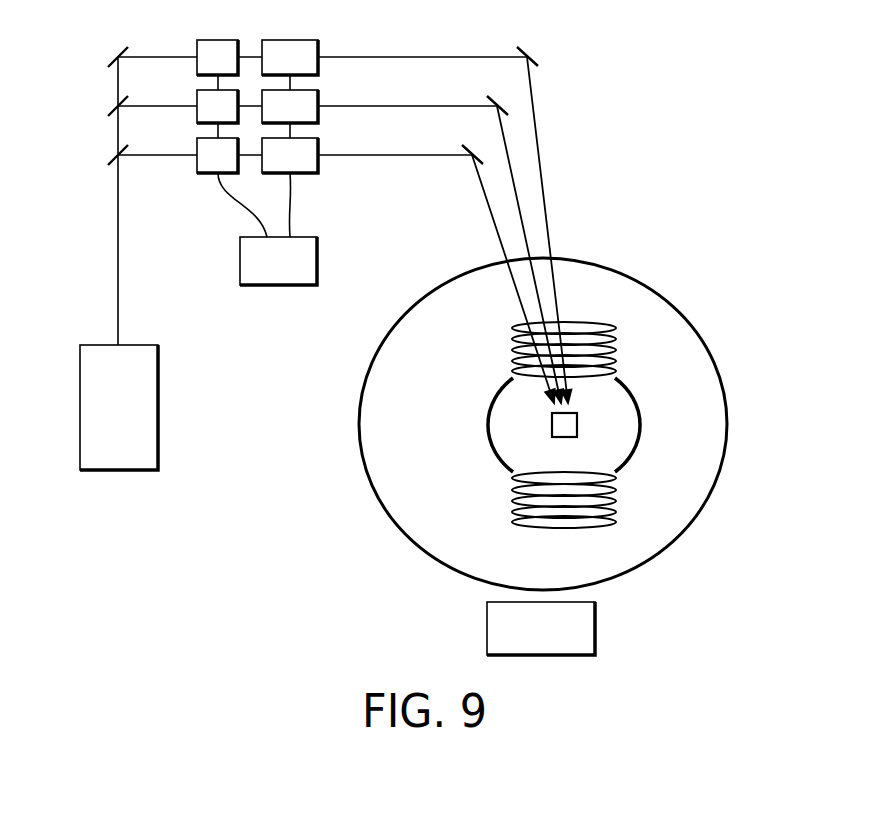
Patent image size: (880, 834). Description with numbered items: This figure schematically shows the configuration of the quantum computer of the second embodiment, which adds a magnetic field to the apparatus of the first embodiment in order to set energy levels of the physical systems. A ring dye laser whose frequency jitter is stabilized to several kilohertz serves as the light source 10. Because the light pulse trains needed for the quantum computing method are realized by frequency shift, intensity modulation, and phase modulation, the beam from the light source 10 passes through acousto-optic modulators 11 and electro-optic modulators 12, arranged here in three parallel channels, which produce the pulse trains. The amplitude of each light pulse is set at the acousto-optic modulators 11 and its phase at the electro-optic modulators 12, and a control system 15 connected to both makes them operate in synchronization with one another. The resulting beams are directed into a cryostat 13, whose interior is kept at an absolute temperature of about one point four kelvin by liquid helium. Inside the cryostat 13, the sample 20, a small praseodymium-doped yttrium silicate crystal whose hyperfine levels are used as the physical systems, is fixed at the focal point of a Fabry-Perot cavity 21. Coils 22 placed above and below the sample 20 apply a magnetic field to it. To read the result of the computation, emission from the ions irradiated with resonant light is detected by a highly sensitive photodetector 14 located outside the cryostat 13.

The light source 10 is at (158, 410).
The acousto-optic modulators 11 is at (203, 173).
The electro-optic modulators 12 is at (310, 173).
The cryostat 13 is at (382, 444).
The photodetector 14 is at (595, 625).
The control system 15 is at (275, 285).
The sample 20 is at (577, 437).
The Fabry-Perot cavity 21 is at (632, 398).
The coils 22 is at (512, 350).